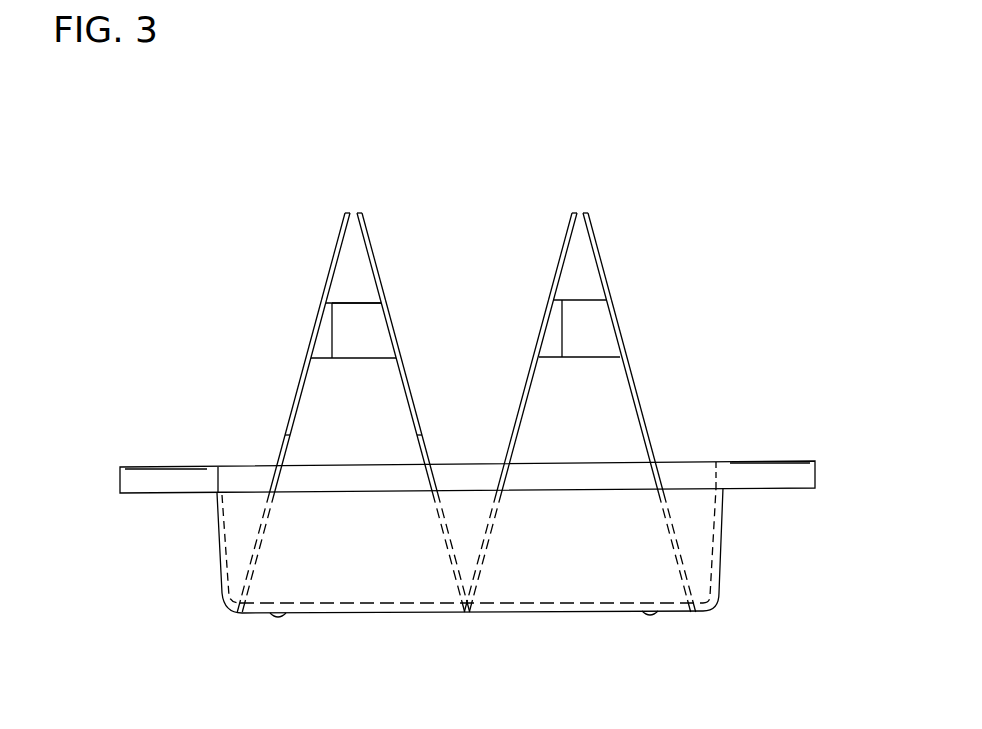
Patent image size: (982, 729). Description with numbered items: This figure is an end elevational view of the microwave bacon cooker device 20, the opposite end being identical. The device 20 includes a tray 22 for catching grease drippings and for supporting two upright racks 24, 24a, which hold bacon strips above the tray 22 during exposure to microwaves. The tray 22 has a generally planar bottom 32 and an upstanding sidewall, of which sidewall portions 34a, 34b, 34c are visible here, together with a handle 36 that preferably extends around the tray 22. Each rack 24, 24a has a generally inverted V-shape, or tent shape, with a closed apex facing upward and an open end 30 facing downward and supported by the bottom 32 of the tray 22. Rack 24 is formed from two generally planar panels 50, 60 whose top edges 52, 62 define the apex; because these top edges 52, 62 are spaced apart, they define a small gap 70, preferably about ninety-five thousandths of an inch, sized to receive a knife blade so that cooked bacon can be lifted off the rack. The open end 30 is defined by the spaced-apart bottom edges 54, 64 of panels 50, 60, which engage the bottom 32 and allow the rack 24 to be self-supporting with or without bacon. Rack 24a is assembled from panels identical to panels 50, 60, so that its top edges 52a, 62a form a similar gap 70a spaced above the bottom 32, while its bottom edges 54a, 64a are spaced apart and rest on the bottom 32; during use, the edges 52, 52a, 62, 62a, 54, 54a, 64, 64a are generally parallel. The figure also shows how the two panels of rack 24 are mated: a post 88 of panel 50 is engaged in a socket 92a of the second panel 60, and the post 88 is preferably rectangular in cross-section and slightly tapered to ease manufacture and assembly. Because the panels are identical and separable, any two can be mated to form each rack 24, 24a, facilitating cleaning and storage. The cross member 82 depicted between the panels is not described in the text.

The microwave bacon cooker device 20 is at (206, 226).
The tray 22 is at (483, 505).
The rack 24 is at (329, 293).
The rack 24a is at (601, 293).
The open end 30 is at (255, 590).
The bottom 32 is at (347, 604).
The sidewall portion 34a is at (217, 567).
The sidewall portion 34b is at (565, 565).
The sidewall portion 34c is at (722, 540).
The handle 36 is at (815, 462).
The panel 50 is at (269, 315).
The top edge 52 is at (343, 212).
The top edge 52a is at (571, 212).
The bottom edge 54 is at (237, 613).
The bottom edge 54a is at (471, 612).
The panel 60 is at (413, 317).
The top edge 62 is at (357, 212).
The top edge 62a is at (585, 212).
The bottom edge 64 is at (466, 612).
The bottom edge 64a is at (697, 612).
The gap 70 is at (349, 203).
The gap 70a is at (578, 203).
The cross brace 82 is at (348, 381).
The post 88 is at (321, 352).
The socket 92a is at (368, 348).